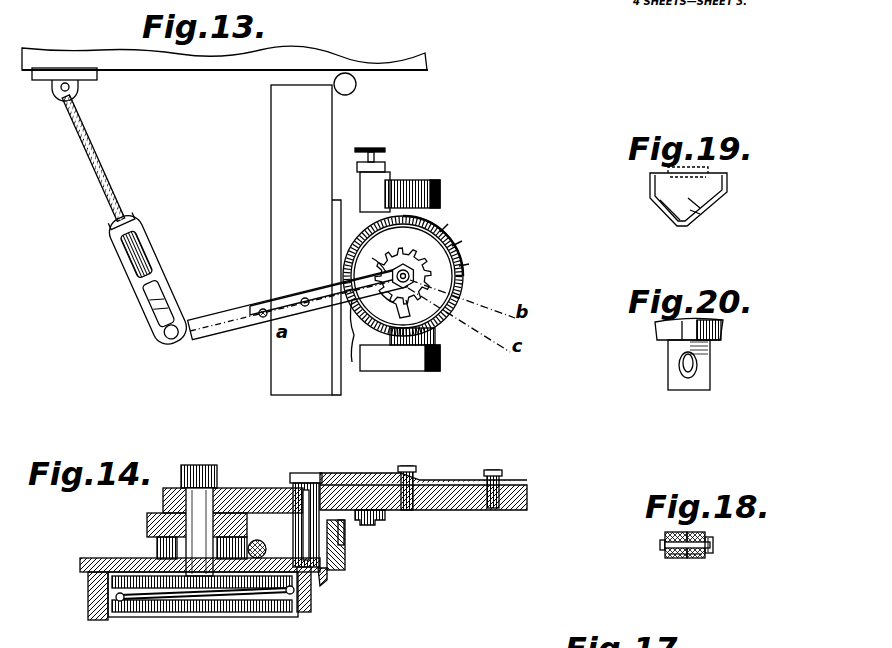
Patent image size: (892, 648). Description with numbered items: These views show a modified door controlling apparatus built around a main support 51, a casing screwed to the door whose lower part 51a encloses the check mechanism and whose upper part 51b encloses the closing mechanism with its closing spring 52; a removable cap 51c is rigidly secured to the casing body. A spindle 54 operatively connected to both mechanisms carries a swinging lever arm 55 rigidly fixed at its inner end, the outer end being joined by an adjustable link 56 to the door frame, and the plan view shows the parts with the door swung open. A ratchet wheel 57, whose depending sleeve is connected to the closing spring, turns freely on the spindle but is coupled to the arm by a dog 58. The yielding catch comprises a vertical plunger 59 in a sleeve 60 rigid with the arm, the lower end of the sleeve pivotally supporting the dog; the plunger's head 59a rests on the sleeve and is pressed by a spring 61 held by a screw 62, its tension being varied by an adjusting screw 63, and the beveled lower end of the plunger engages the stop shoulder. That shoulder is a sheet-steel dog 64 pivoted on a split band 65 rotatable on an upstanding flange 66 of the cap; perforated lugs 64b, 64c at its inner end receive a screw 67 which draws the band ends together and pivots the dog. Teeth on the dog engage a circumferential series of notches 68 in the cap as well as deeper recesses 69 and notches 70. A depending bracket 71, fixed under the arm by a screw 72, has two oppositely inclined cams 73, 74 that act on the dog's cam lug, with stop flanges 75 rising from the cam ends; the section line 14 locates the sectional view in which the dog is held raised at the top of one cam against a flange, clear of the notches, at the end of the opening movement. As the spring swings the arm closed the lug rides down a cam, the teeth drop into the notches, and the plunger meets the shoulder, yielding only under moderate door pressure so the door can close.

In FIG. 13, the section line 14 is at (250, 309).
In FIG. 13, the main support 51 is at (450, 232).
In FIG. 14, the main support 51 is at (92, 606).
In FIG. 13, the lower part 51a is at (414, 198).
In FIG. 14, the upper part 51b is at (312, 600).
In FIG. 14, the removable cap 51c is at (86, 566).
In FIG. 14, the closing spring 52 is at (180, 612).
In FIG. 13, the spindle 54 is at (410, 262).
In FIG. 14, the spindle 54 is at (222, 492).
In FIG. 13, the swinging lever arm 55 is at (208, 330).
In FIG. 14, the swinging lever arm 55 is at (466, 508).
In FIG. 13, the adjustable link 56 is at (125, 206).
In FIG. 13, the ratchet wheel 57 is at (408, 277).
In FIG. 14, the ratchet wheel 57 is at (155, 508).
In FIG. 13, the dog 58 is at (388, 277).
In FIG. 14, the dog 58 is at (260, 520).
In FIG. 14, the plunger 59 is at (326, 485).
In FIG. 13, the head 59a is at (357, 342).
In FIG. 14, the head 59a is at (306, 476).
In FIG. 14, the sleeve 60 is at (306, 472).
In FIG. 13, the spring 61 is at (318, 290).
In FIG. 14, the spring 61 is at (372, 474).
In FIG. 13, the screw 62 is at (262, 318).
In FIG. 14, the screw 62 is at (494, 470).
In FIG. 13, the screw 63 is at (306, 308).
In FIG. 14, the screw 63 is at (408, 466).
In FIG. 14, the dog 64 is at (340, 552).
In FIG. 18, the lug 64b is at (705, 554).
In FIG. 18, the lug 64c is at (666, 548).
In FIG. 14, the split band 65 is at (156, 542).
In FIG. 18, the split band 65 is at (686, 558).
In FIG. 14, the upstanding flange 66 is at (246, 612).
In FIG. 18, the screw 67 is at (713, 545).
In FIG. 13, the notches 68 is at (420, 228).
In FIG. 13, the recesses 69 is at (456, 253).
In FIG. 13, the notches 70 is at (462, 300).
In FIG. 14, the bracket 71 is at (345, 536).
In FIG. 19, the bracket 71 is at (690, 226).
In FIG. 20, the bracket 71 is at (710, 350).
In FIG. 14, the screw 72 is at (372, 524).
In FIG. 14, the cam 73 is at (328, 572).
In FIG. 19, the cam 73 is at (670, 214).
In FIG. 19, the cam 74 is at (712, 208).
In FIG. 19, the stop flanges 75 is at (650, 186).